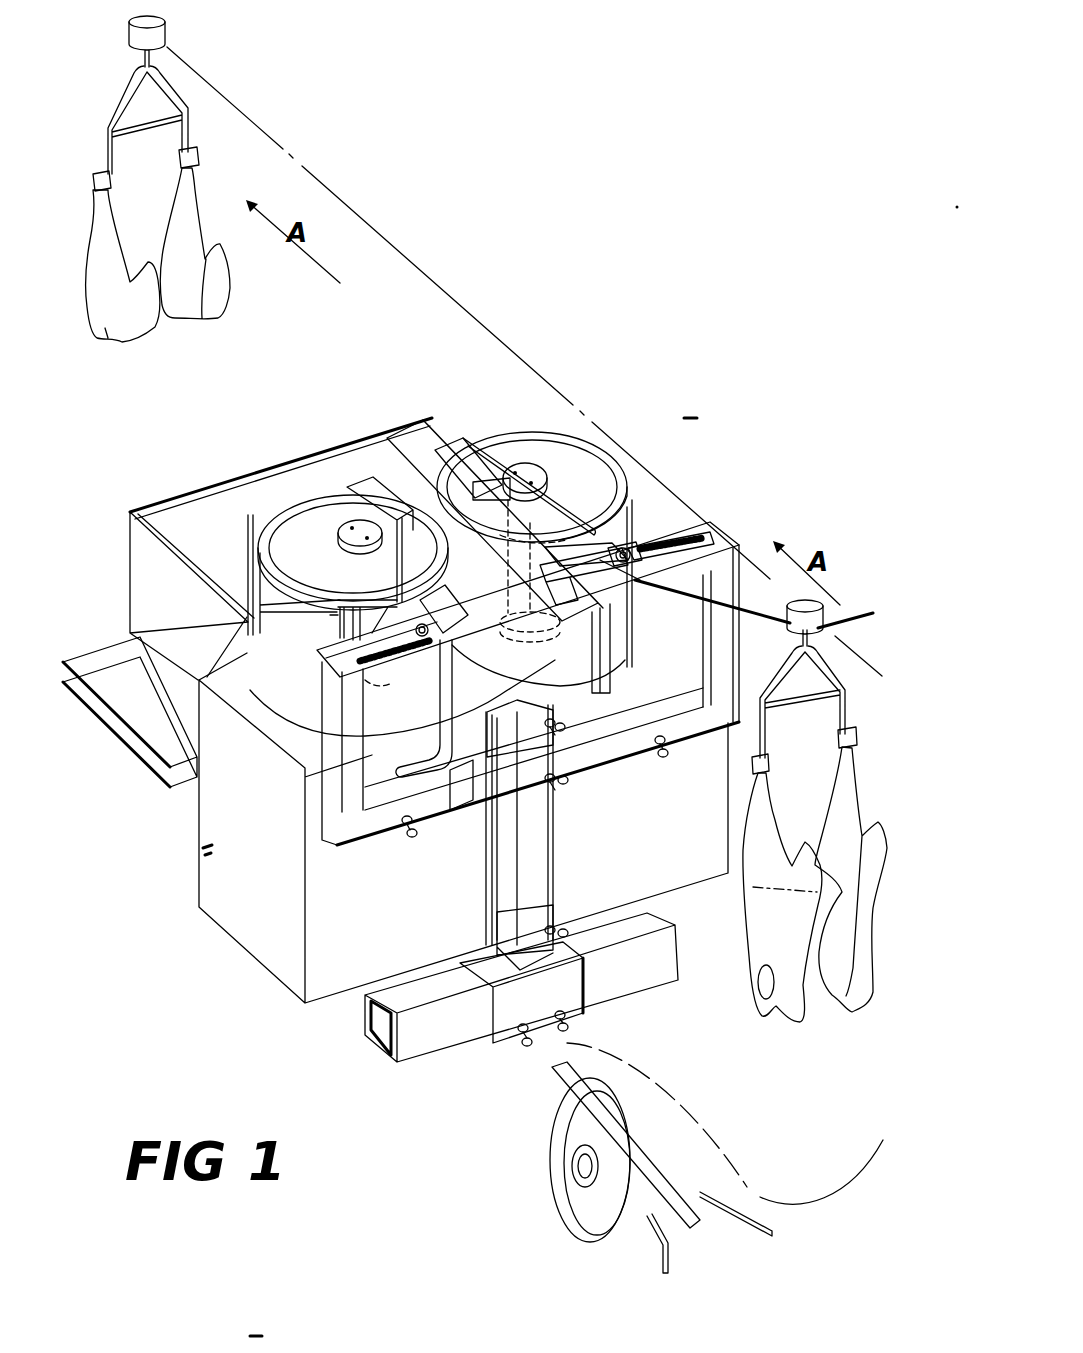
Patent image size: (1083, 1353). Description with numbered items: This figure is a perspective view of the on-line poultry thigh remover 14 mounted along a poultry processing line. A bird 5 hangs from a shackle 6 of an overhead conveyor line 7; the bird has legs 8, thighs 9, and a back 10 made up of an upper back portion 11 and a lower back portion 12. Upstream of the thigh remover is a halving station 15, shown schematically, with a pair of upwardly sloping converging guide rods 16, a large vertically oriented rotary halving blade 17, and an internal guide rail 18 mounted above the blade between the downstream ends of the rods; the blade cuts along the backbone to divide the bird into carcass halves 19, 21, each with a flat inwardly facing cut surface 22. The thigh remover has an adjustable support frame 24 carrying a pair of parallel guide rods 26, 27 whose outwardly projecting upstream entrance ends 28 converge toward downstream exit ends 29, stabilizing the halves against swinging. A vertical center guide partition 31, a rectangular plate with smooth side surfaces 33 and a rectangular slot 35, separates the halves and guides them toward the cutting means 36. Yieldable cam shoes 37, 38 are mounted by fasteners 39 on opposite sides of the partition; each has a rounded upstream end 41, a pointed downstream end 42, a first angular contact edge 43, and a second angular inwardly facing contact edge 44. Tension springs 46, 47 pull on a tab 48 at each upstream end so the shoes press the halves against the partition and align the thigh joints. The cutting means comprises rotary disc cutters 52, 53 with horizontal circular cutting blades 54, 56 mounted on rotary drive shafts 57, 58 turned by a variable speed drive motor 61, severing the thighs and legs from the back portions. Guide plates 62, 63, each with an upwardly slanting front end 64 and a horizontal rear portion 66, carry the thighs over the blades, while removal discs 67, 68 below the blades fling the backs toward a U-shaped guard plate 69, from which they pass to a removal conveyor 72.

The bird 5 is at (747, 1060).
The shackle 6 is at (146, 60).
The overhead conveyor line 7 is at (873, 668).
The legs 8 is at (100, 240).
The thighs 9 is at (105, 340).
The back 10 is at (772, 937).
The upper back portion 11 is at (778, 1002).
The lower back portion 12 is at (827, 912).
The on-line poultry thigh remover 14 is at (755, 515).
The halving station 15 is at (536, 1155).
The guide rods 16 is at (745, 1237).
The rotary halving blade 17 is at (567, 1203).
The internal guide rail 18 is at (688, 1200).
The carcass half 19 is at (230, 313).
The carcass half 21 is at (75, 305).
The cut surface 22 is at (810, 965).
The adjustable support frame 24 is at (628, 983).
The guide rod 26 is at (675, 590).
The guide rod 27 is at (444, 698).
The upstream entrance ends 28 is at (430, 772).
The downstream exit ends 29 is at (640, 567).
The vertical center guide partition 31 is at (410, 426).
The side surface 33 is at (541, 657).
The rectangular slot 35 is at (462, 556).
The cutting means 36 is at (543, 432).
The yieldable cam shoe 37 is at (614, 540).
The yieldable cam shoe 38 is at (430, 603).
The fasteners 39 is at (330, 652).
The rounded upstream end 41 is at (636, 598).
The pointed downstream end 42 is at (563, 532).
The first angular contact edge 43 is at (446, 618).
The second angular inwardly facing contact edge 44 is at (466, 590).
The tension spring 46 is at (716, 538).
The tension spring 47 is at (395, 668).
The tab 48 is at (405, 660).
The rotary disc cutter 52 is at (593, 450).
The rotary disc cutter 53 is at (270, 510).
The cutting blade 54 is at (553, 482).
The cutting blade 56 is at (296, 561).
The rotary drive shaft 57 is at (532, 618).
The rotary drive shaft 58 is at (337, 622).
The variable speed drive motor 61 is at (193, 855).
The guide plate 62 is at (453, 445).
The guide plate 63 is at (364, 482).
The upwardly slanting front end 64 is at (400, 560).
The horizontal rear portion 66 is at (372, 485).
The removal disc 67 is at (470, 666).
The removal disc 68 is at (255, 688).
The U-shaped guard plate 69 is at (132, 523).
The removal conveyor 72 is at (153, 727).